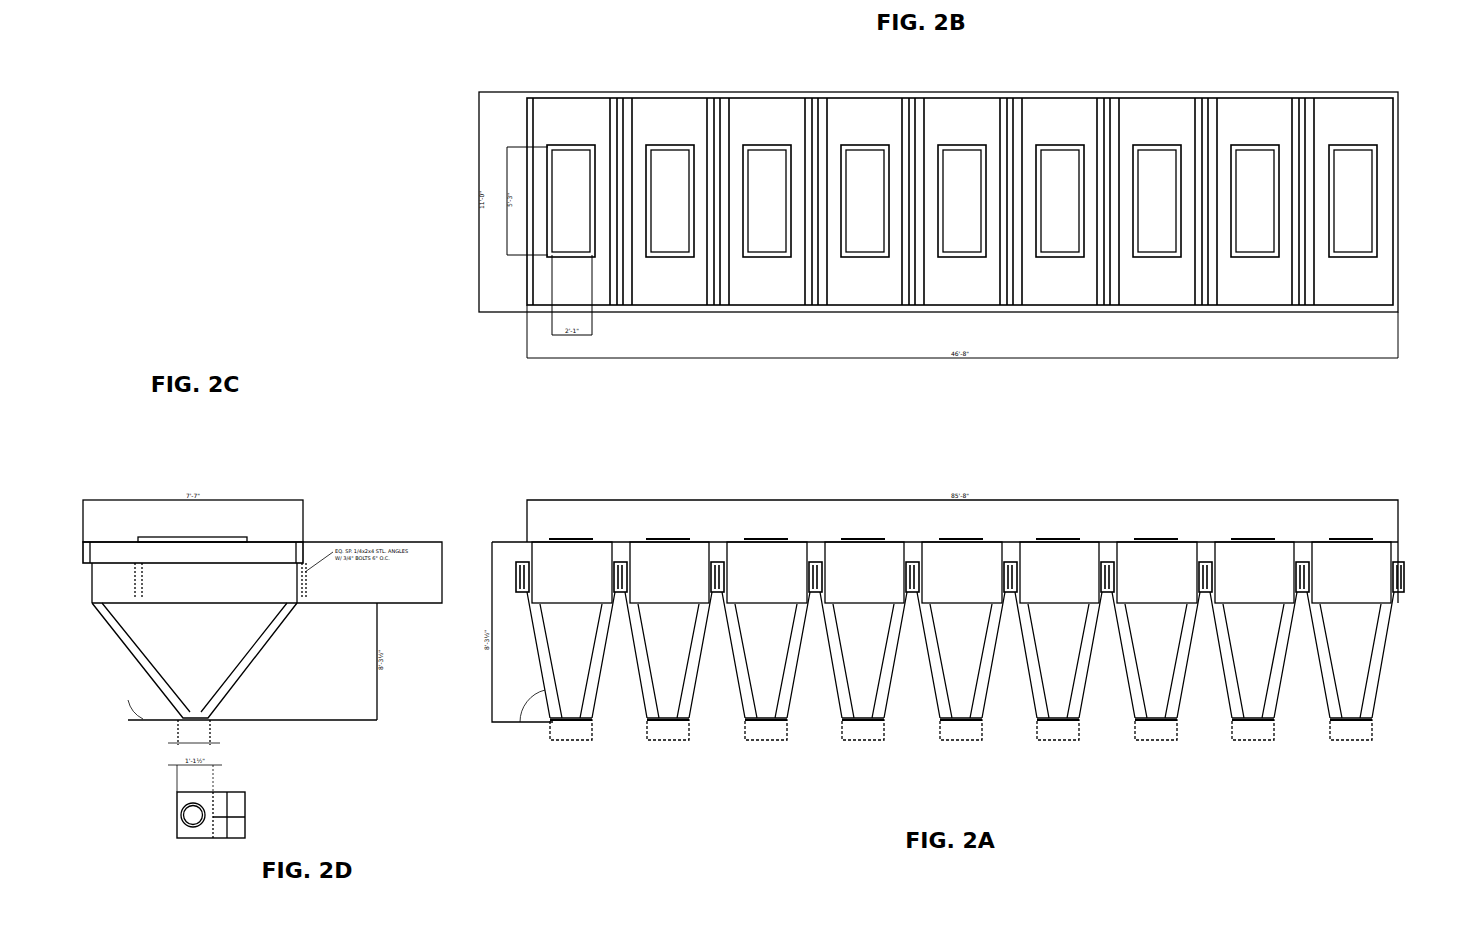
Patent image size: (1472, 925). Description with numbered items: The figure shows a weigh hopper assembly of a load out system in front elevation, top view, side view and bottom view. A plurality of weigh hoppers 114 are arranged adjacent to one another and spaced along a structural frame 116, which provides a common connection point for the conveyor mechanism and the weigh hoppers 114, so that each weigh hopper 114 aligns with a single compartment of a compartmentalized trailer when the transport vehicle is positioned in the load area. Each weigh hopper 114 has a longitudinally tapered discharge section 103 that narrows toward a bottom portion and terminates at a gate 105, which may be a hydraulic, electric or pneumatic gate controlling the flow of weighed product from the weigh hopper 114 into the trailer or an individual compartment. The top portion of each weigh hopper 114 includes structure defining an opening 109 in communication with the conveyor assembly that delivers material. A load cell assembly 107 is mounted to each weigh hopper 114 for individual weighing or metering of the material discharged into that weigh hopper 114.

In FIG. 2A, the longitudinally tapered discharge section 103 is at (960, 655).
In FIG. 2C, the longitudinally tapered discharge section 103 is at (194, 660).
In FIG. 2A, the gate 105 is at (1253, 762).
In FIG. 2C, the gate 105 is at (192, 723).
In FIG. 2D, the gate 105 is at (178, 836).
In FIG. 2A, the load cell assembly 107 is at (1400, 560).
In FIG. 2B, the opening 109 is at (962, 201).
In FIG. 2A, the opening 109 is at (1345, 537).
In FIG. 2C, the opening 109 is at (185, 537).
In FIG. 2B, the weigh hopper 114 is at (572, 118).
In FIG. 2A, the weigh hopper 114 is at (961, 572).
In FIG. 2C, the weigh hopper 114 is at (286, 503).
In FIG. 2B, the structural frame 116 is at (1252, 94).